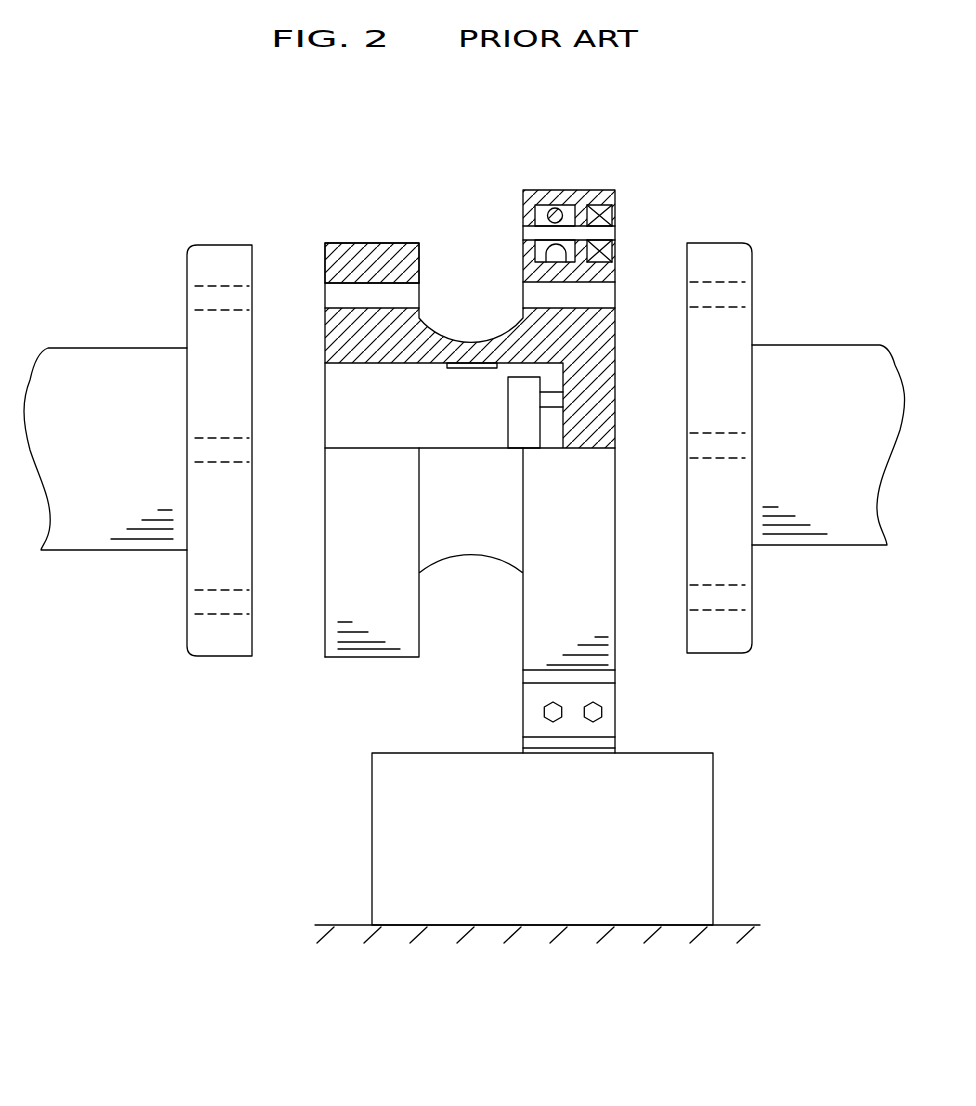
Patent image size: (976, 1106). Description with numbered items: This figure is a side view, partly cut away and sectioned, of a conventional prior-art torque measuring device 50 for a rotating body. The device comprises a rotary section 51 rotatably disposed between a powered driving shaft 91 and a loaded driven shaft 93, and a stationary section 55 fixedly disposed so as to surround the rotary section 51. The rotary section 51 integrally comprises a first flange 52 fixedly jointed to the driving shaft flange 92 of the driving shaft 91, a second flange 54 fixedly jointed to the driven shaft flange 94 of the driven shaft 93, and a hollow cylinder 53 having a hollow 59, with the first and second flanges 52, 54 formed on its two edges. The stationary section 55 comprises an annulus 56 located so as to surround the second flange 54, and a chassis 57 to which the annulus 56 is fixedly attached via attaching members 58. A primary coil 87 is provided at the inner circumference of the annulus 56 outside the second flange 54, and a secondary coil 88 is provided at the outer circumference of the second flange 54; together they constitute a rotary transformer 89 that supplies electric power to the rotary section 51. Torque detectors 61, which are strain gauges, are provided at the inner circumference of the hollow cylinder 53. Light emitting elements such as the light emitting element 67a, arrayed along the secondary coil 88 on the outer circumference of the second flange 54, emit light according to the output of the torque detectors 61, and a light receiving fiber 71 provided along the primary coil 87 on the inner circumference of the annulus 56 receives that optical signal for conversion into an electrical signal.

The conventional torque measuring device 50 is at (312, 222).
The rotary section 51 is at (487, 167).
The first flange 52 is at (373, 243).
The hollow cylinder 53 is at (470, 348).
The second flange 54 is at (532, 337).
The stationary section 55 is at (792, 717).
The annulus 56 is at (608, 612).
The chassis 57 is at (690, 815).
The attaching members 58 is at (533, 723).
The hollow 59 is at (397, 405).
The torque detectors 61 is at (447, 367).
The light emitting element 67a is at (558, 258).
The light receiving fiber 71 is at (558, 207).
The primary coil 87 is at (600, 205).
The secondary coil 88 is at (610, 252).
The rotary transformer 89 is at (695, 128).
The driving shaft 91 is at (86, 516).
The driving shaft flange 92 is at (224, 646).
The driven shaft 93 is at (853, 522).
The driven shaft flange 94 is at (740, 628).